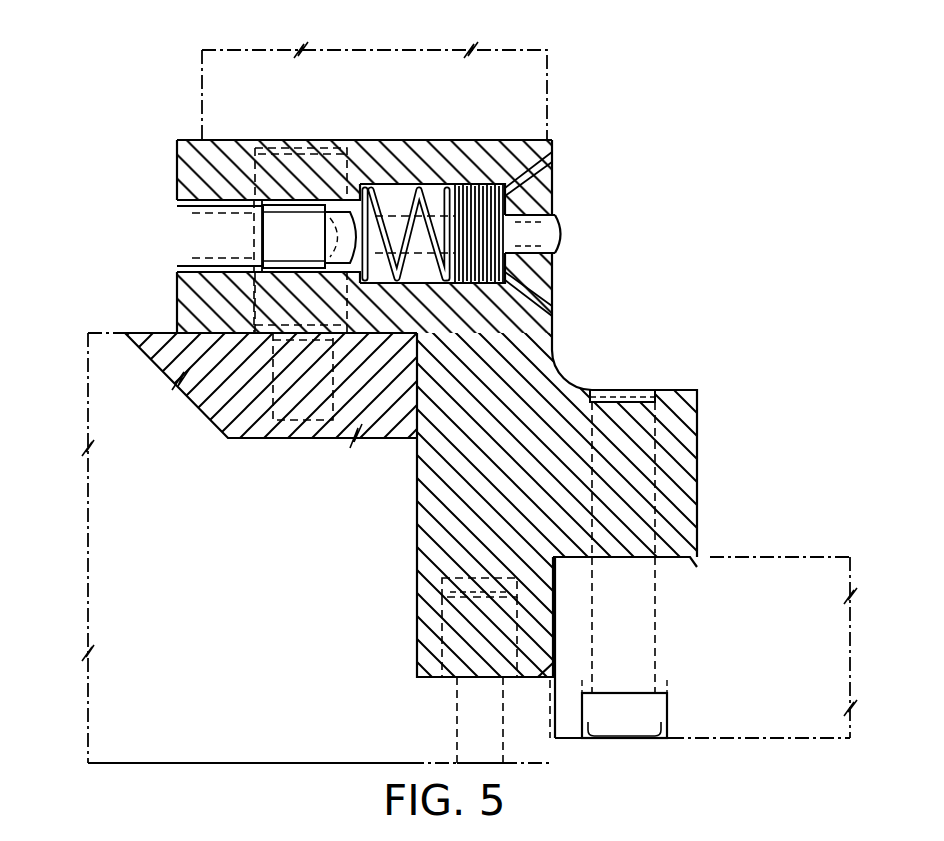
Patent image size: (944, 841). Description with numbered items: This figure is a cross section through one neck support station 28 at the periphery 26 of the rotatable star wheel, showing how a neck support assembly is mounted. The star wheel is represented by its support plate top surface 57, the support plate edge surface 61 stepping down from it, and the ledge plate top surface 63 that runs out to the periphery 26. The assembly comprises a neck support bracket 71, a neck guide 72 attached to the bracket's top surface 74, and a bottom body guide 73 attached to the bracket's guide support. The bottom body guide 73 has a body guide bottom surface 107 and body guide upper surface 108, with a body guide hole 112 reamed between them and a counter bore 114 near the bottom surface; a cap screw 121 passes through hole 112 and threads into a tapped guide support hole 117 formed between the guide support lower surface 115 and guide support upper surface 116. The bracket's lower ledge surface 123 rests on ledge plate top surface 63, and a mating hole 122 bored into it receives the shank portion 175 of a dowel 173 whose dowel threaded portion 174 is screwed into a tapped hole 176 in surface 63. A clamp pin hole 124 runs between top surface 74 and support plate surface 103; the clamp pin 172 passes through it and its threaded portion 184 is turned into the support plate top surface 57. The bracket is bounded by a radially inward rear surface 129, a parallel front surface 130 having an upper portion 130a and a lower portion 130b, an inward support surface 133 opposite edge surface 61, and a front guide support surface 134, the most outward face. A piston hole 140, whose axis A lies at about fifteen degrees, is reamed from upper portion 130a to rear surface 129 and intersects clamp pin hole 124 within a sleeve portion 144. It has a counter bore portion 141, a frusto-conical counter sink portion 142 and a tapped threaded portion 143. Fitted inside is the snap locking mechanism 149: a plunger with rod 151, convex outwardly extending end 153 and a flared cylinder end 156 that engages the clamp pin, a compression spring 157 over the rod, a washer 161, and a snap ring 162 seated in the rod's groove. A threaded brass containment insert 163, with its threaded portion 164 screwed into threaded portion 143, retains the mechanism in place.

The periphery 26 is at (553, 752).
The neck support station 28 is at (153, 290).
The support plate top surface 57 is at (215, 322).
The support plate edge surface 61 is at (420, 412).
The ledge plate top surface 63 is at (547, 668).
The neck support bracket 71 is at (170, 173).
The neck guide 72 is at (197, 65).
The bottom body guide 73 is at (807, 551).
The top surface 74 is at (522, 140).
The axis A is at (172, 222).
The support plate surface 103 is at (180, 343).
The body guide bottom surface 107 is at (800, 740).
The body guide upper surface 108 is at (772, 552).
The body guide hole 112 is at (652, 600).
The counter bore 114 is at (672, 710).
The guide support lower surface 115 is at (697, 567).
The guide support upper surface 116 is at (683, 390).
The guide support hole 117 is at (690, 405).
The cap screw 121 is at (645, 740).
The ledge plate or mating hole 122 is at (455, 642).
The lower ledge surface 123 is at (530, 678).
The clamp pin opening or hole 124 is at (343, 146).
The rear surface 129 is at (173, 155).
The front surface 130 is at (580, 347).
The upper portion of front surface 130a is at (553, 330).
The lower portion of front surface 130b is at (555, 629).
The inward support surface 133 is at (417, 497).
The front guide support surface 134 is at (697, 445).
The piston hole 140 is at (220, 188).
The counter bore portion 141 is at (433, 186).
The counter sink portion 142 is at (553, 162).
The tapped threaded portion 143 is at (553, 180).
The sleeve portion 144 is at (198, 268).
The snap locking mechanism 149 is at (403, 188).
The rod 151 is at (553, 207).
The outwardly extending end 153 is at (562, 230).
The cylinder end 156 is at (288, 208).
The compression spring 157 is at (352, 208).
The washer 161 is at (463, 186).
The snap ring 162 is at (538, 284).
The threaded brass containment insert 163 is at (545, 262).
The threaded portion 164 is at (482, 288).
The clamp pin 172 is at (269, 142).
The dowel or stud 173 is at (443, 607).
The dowel threaded portion 174 is at (472, 730).
The shank portion 175 is at (446, 622).
The tapped hole 176 is at (457, 695).
The threaded portion 184 is at (287, 422).